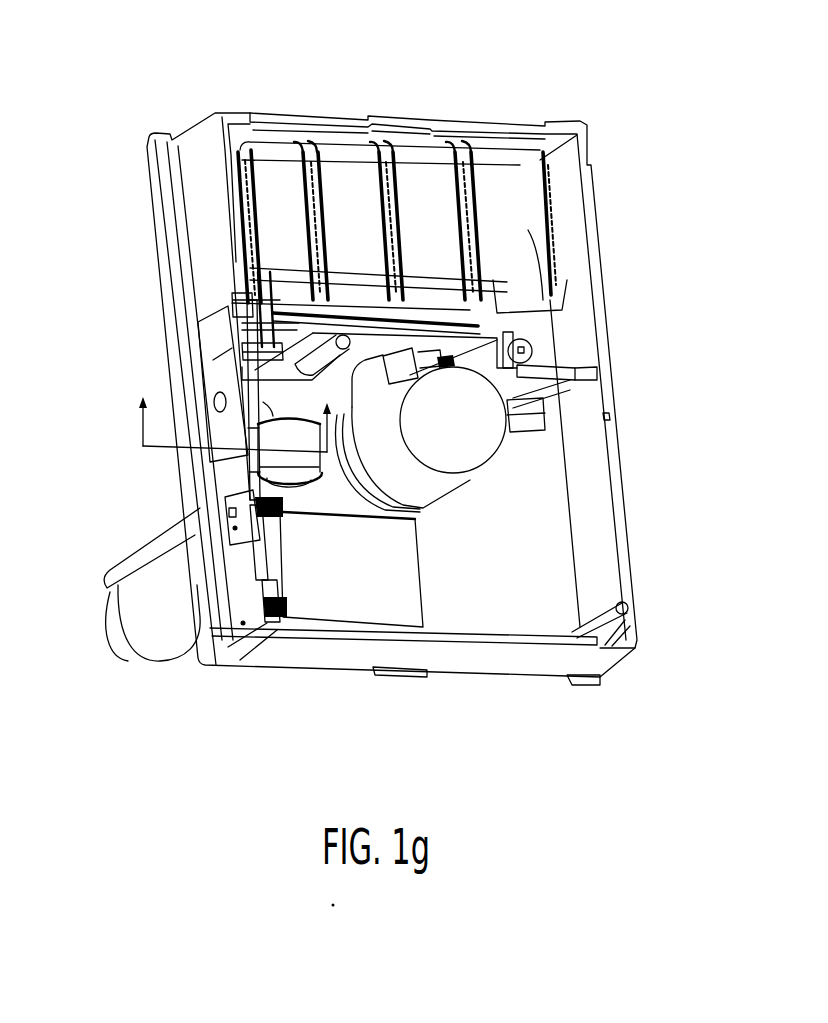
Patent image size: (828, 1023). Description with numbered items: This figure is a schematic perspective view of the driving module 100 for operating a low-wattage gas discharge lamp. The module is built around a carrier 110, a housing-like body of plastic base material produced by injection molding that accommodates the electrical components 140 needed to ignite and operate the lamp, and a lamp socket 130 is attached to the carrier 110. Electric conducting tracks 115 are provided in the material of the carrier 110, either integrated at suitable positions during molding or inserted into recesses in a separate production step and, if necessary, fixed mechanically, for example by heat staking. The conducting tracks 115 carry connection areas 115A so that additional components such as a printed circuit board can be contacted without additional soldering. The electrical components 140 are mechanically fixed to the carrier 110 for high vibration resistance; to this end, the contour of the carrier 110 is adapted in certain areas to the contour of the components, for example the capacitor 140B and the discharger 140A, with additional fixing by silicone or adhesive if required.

The driving module 100 is at (180, 83).
The carrier 110 is at (156, 249).
The electric conducting tracks 115 is at (222, 645).
The connection areas 115A is at (283, 645).
The lamp socket 130 is at (490, 479).
The electrical components 140 is at (448, 585).
The discharger 140A is at (248, 456).
The capacitor 140B is at (381, 578).